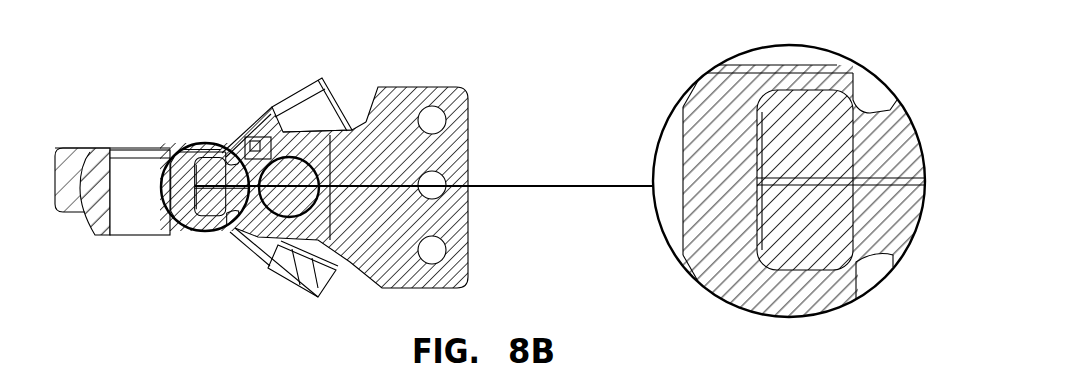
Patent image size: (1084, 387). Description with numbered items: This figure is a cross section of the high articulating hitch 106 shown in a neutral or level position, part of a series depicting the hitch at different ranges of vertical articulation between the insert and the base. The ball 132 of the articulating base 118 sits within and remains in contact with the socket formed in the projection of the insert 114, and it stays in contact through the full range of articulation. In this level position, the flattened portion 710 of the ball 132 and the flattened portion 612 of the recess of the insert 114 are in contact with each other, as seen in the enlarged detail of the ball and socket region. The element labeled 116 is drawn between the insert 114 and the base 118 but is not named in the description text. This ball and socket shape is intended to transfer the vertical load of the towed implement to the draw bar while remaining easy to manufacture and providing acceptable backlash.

The hitch 106 is at (187, 51).
The insert 114 is at (100, 149).
The flange 116 is at (265, 126).
The articulating base 118 is at (410, 100).
The ball 132 is at (867, 147).
The flattened portion of the recess 612 is at (758, 163).
The flattened portion of the ball 710 is at (762, 195).